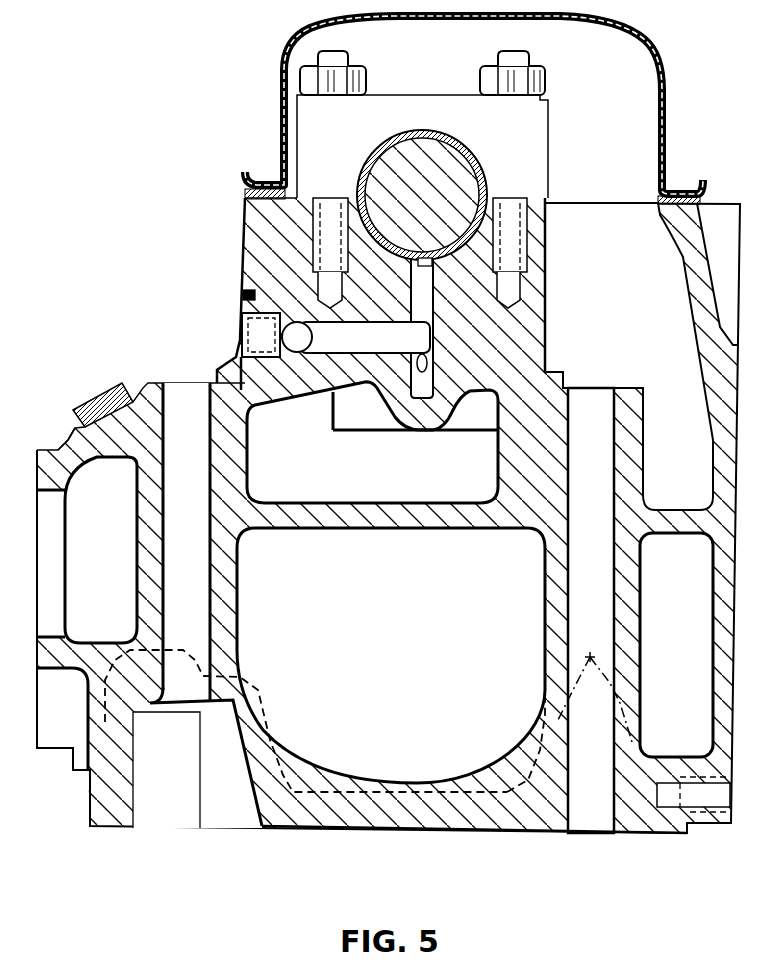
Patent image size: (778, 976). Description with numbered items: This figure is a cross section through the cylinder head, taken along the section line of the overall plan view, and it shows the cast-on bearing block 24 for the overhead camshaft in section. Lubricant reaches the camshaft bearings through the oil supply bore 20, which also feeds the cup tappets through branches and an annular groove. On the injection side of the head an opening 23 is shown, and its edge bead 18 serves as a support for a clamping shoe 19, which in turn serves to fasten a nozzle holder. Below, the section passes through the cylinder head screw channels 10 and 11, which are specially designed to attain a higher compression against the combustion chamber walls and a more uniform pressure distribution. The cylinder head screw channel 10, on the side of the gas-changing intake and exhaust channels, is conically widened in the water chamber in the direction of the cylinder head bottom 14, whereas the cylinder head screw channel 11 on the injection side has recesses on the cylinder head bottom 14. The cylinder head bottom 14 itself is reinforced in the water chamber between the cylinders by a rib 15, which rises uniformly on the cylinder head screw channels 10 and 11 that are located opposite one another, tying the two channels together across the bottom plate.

The cylinder head screw channel 10 is at (537, 747).
The cylinder head screw channel 11 is at (255, 745).
The cylinder head bottom 14 is at (332, 812).
The rib 15 is at (472, 778).
The edge bead 18 is at (73, 427).
The clamping shoe 19 is at (110, 383).
The oil supply bore 20 is at (327, 345).
The opening 23 is at (53, 582).
The cast-on bearing block 24 is at (243, 246).